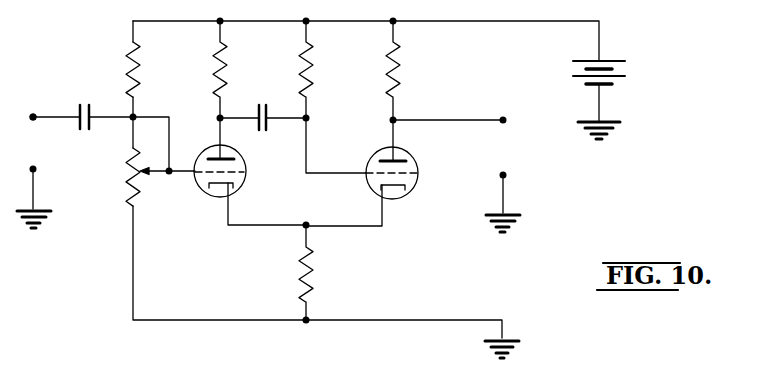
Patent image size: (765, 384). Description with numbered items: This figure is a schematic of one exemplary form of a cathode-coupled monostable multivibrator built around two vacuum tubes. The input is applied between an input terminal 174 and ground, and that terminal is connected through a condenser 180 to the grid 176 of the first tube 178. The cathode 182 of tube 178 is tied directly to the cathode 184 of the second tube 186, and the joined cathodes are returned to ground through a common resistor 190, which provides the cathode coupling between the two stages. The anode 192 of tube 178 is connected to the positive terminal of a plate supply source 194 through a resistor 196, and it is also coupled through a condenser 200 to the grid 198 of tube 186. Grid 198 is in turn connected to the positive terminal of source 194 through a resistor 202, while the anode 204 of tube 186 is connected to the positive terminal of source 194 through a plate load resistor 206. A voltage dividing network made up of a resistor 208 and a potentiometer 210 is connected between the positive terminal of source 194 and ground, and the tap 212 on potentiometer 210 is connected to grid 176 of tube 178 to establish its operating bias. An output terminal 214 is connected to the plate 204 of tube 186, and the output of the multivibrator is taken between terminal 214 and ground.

The input terminal 174 is at (33, 114).
The condenser 180 is at (83, 131).
The resistor 208 is at (128, 56).
The potentiometer 210 is at (130, 183).
The tap 212 is at (158, 174).
The resistor 196 is at (226, 62).
The condenser 200 is at (260, 106).
The resistor 202 is at (313, 66).
The plate load resistor 206 is at (399, 68).
The output terminal 214 is at (503, 116).
The anode 192 is at (208, 154).
The tube 178 is at (246, 164).
The grid 176 is at (244, 179).
The cathode 182 is at (221, 200).
The grid 198 is at (338, 174).
The anode 204 is at (406, 158).
The tube 186 is at (418, 190).
The cathode 184 is at (398, 200).
The resistor 190 is at (313, 265).
The plate supply source 194 is at (625, 68).